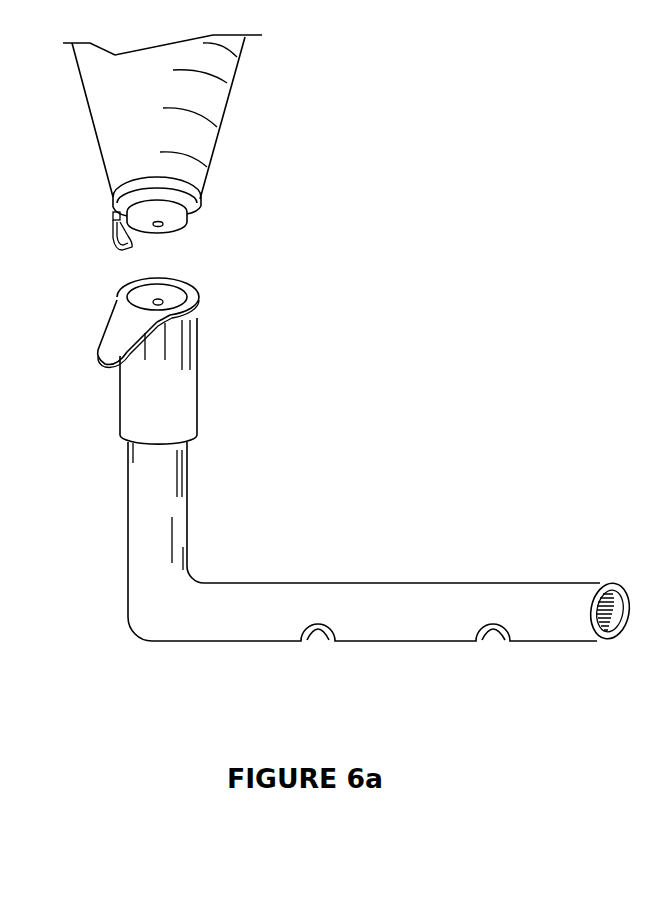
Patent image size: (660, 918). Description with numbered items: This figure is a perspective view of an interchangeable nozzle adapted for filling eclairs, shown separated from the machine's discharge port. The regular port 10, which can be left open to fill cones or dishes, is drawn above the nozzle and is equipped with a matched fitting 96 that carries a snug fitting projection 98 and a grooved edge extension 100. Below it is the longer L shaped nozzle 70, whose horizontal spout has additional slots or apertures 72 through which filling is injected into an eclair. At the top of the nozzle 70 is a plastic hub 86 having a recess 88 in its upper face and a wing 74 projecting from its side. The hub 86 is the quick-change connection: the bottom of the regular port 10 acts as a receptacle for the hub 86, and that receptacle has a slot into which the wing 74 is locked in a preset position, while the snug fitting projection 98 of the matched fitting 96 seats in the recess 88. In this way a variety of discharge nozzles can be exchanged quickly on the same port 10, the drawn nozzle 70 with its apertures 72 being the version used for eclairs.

The regular port 10 is at (205, 100).
The matched fitting 96 is at (200, 203).
The snug fitting projection 98 is at (187, 213).
The grooved edge extension 100 is at (112, 233).
The recess 88 is at (165, 297).
The wing 74 is at (102, 333).
The plastic hub 86 is at (190, 358).
The L shaped nozzle 70 is at (188, 537).
The slots or apertures 72 is at (310, 635).